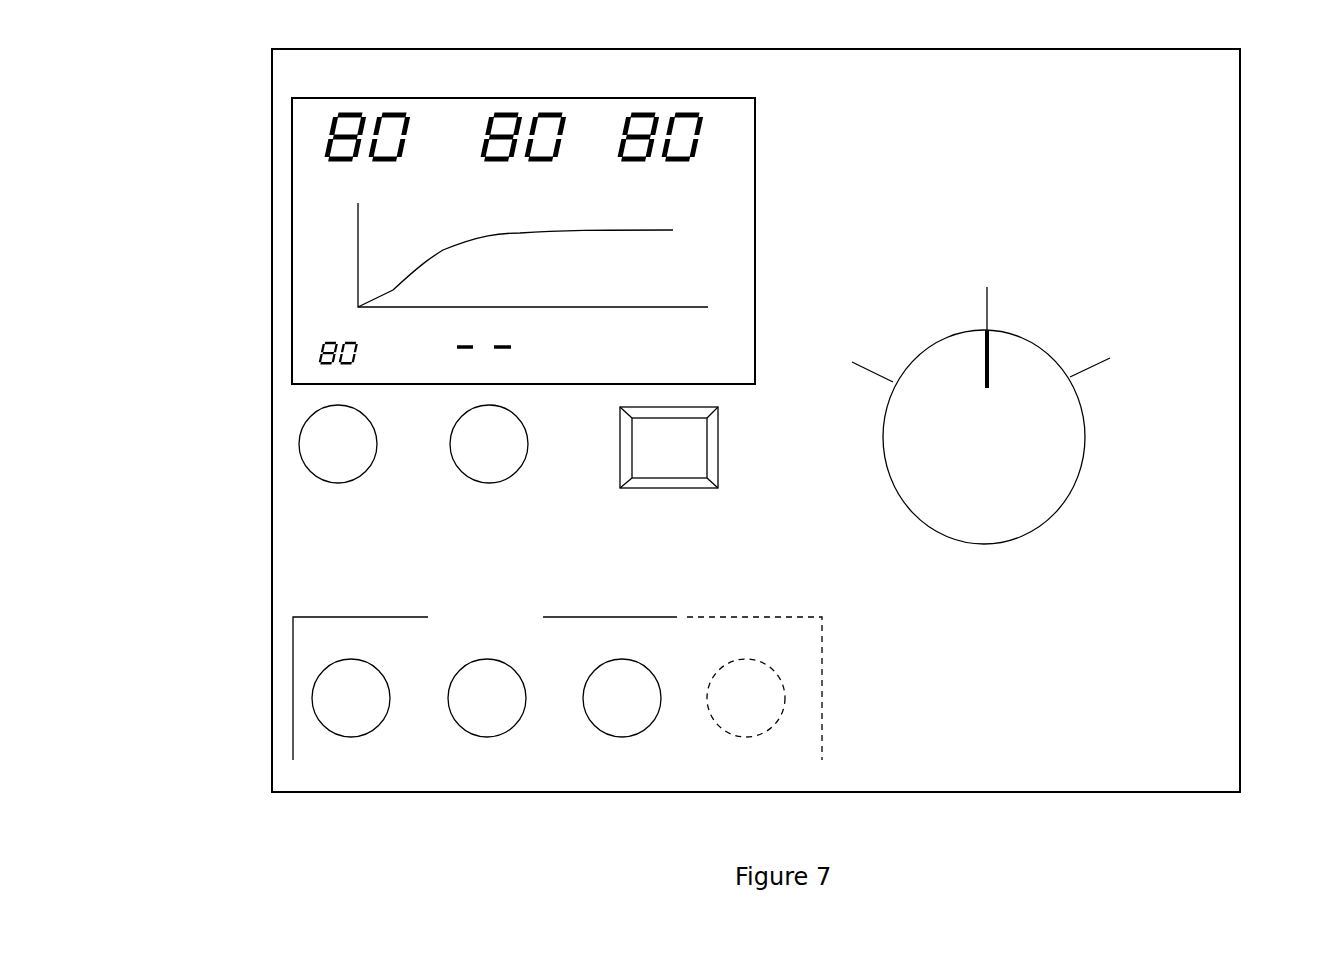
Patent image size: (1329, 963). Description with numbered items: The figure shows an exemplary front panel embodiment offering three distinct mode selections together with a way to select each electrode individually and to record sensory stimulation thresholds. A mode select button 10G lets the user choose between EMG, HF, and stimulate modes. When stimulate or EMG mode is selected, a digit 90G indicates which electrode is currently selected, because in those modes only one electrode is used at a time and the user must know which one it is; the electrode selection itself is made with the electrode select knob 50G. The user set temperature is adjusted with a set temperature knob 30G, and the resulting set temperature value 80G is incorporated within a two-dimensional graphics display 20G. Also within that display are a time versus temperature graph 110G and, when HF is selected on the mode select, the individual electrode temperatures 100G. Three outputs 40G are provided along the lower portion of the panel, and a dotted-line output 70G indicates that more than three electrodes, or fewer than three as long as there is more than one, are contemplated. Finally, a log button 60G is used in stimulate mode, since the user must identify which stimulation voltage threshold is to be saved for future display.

The mode select button 10G is at (1052, 342).
The two-dimensional graphics display 20G is at (317, 243).
The set temperature knob 30G is at (287, 427).
The three outputs 40G is at (398, 648).
The electrode select knob 50G is at (533, 487).
The log button 60G is at (725, 408).
The optional additional output 70G is at (803, 730).
The set temperature value 80G is at (300, 350).
The selected electrode digit 90G is at (513, 325).
The individual electrode temperatures 100G is at (642, 113).
The time vs. temperature graph 110G is at (417, 263).